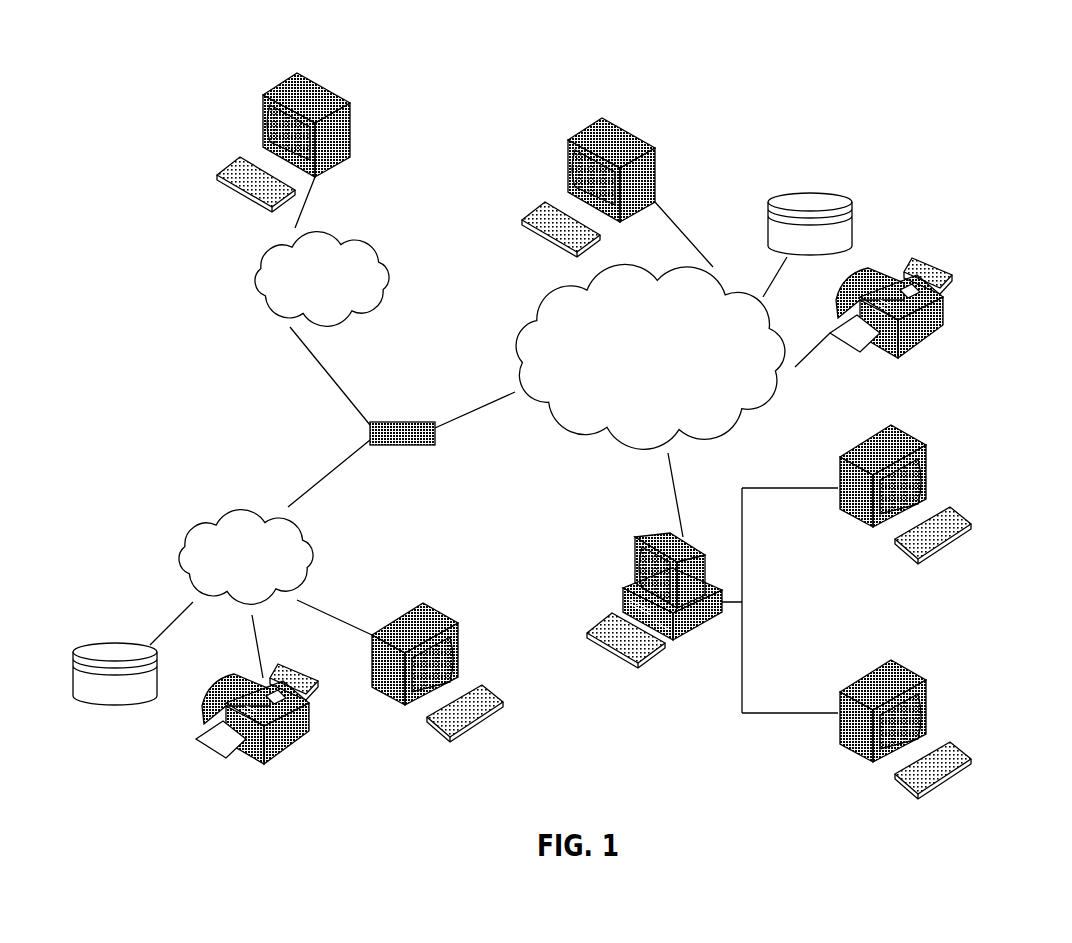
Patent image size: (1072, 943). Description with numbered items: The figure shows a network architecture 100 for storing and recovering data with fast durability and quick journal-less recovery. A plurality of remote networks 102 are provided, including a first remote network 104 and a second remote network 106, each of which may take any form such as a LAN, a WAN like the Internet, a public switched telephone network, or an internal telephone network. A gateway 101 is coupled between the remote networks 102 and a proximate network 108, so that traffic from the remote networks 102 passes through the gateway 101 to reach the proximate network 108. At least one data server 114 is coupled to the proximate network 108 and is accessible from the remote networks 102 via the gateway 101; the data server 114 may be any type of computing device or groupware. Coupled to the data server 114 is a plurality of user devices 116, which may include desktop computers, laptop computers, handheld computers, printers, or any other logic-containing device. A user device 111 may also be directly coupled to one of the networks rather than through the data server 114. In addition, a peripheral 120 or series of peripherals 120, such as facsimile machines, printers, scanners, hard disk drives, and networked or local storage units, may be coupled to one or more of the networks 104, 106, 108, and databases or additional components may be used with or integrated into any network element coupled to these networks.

The network architecture 100 is at (968, 112).
The gateway 101 is at (400, 422).
The remote networks 102 is at (227, 357).
The first remote network 104 is at (172, 533).
The second remote network 106 is at (400, 287).
The proximate network 108 is at (763, 415).
The user device 111 is at (657, 185).
The data server 114 is at (633, 560).
The user devices 116 is at (350, 132).
The peripheral 120 is at (810, 190).